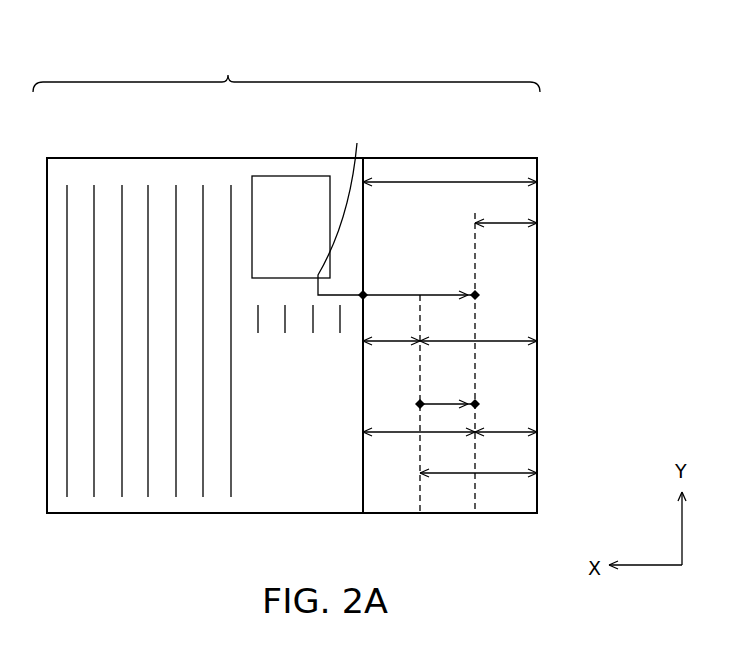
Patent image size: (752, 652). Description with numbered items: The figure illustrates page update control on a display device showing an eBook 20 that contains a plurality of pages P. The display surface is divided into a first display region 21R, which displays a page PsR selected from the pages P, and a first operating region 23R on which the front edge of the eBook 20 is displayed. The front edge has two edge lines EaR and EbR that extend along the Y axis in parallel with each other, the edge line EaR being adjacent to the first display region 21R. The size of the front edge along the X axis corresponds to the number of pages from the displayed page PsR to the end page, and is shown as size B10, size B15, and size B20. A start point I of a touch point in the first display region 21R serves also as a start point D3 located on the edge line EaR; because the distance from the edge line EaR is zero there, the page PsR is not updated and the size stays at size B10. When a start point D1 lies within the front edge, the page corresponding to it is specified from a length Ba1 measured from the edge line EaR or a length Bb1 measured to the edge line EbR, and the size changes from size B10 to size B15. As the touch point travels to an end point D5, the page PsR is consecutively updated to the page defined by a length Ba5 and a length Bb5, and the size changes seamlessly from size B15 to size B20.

The eBook 20 is at (99, 66).
The pages P is at (286, 68).
The first display region 21R is at (87, 156).
The page PsR is at (298, 163).
The start point I is at (340, 207).
The first operating region 23R is at (462, 155).
The size B10 is at (398, 185).
The size B20 is at (512, 220).
The start point D3 is at (368, 292).
The end point D5 is at (480, 292).
The start point D1 is at (415, 401).
The length Bb1 is at (516, 339).
The length Ba1 is at (372, 348).
The edge line EaR is at (363, 387).
The length Bb5 is at (516, 430).
The length Ba5 is at (372, 438).
The edge line EbR is at (540, 505).
The size B15 is at (452, 478).